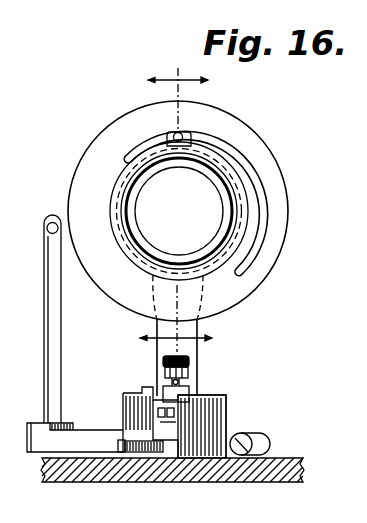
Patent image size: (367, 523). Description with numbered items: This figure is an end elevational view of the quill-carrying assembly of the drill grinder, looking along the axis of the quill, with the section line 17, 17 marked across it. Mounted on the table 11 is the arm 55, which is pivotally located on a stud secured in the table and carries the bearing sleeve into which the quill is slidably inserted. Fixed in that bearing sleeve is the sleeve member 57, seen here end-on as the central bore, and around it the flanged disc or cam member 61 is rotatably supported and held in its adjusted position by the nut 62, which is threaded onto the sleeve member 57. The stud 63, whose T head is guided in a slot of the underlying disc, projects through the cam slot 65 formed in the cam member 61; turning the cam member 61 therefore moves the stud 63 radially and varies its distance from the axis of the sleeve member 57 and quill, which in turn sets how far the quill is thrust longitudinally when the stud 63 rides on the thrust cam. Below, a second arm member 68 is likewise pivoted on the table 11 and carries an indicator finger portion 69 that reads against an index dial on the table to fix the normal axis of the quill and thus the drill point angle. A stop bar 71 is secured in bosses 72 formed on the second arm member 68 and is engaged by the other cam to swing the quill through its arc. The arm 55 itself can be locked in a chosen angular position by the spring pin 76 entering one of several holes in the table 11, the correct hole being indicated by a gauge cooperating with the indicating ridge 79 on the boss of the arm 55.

The table 11 is at (225, 481).
The section line 17- 17 is at (162, 201).
The arm 55 is at (190, 346).
The sleeve member 57 is at (221, 193).
The cam member 61 is at (272, 263).
The nut 62 is at (132, 248).
The stud 63 is at (181, 133).
The cam slot 65 is at (263, 192).
The second arm member 68 is at (122, 442).
The indicator finger portion 69 is at (163, 442).
The stop bar 71 is at (51, 245).
The bosses 72 is at (28, 423).
The spring pin 76 is at (190, 376).
The indicating ridge 79 is at (226, 410).